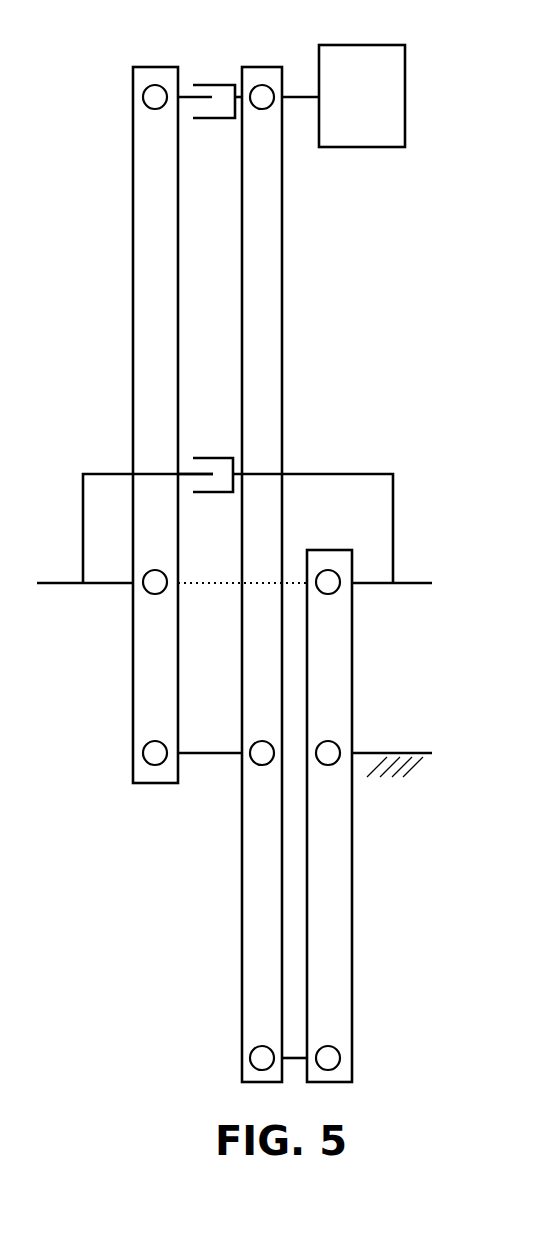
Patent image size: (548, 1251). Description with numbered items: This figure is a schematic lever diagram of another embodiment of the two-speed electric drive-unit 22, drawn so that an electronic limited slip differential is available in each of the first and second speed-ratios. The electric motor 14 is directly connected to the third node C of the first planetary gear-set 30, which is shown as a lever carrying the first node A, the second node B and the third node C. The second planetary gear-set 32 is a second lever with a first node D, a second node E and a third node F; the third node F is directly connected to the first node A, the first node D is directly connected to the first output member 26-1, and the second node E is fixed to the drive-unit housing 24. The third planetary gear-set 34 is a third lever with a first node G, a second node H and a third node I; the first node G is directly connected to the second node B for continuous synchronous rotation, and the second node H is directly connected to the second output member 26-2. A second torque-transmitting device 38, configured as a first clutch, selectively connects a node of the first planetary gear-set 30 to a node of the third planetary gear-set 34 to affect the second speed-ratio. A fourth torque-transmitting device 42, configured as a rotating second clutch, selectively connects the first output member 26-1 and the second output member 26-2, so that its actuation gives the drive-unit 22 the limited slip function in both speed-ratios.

The electric drive-unit 22 is at (104, 215).
The electric motor 14 is at (347, 148).
The drive-unit housing 24 is at (397, 773).
The first output member 26-1 is at (420, 588).
The second output member 26-2 is at (56, 588).
The first planetary gear-set 30 is at (262, 574).
The second planetary gear-set 32 is at (329, 816).
The third planetary gear-set 34 is at (155, 425).
The second torque-transmitting device 38 is at (208, 83).
The fourth torque-transmitting device 42 is at (222, 457).
The first node of the first planetary gear-set A is at (258, 1057).
The second node of the first planetary gear-set B is at (258, 750).
The third node of the first planetary gear-set C is at (264, 90).
The first node of the second planetary gear-set D is at (332, 577).
The second node of the second planetary gear-set E is at (327, 752).
The third node of the second planetary gear-set F is at (332, 1056).
The first node of the third planetary gear-set G is at (153, 762).
The second node of the third planetary gear-set H is at (155, 578).
The third node of the third planetary gear-set I is at (157, 90).